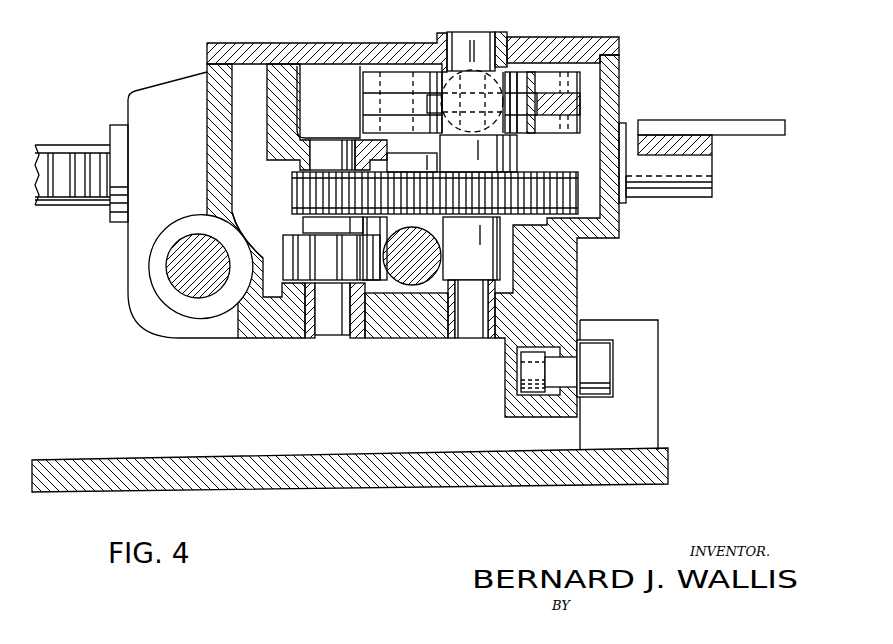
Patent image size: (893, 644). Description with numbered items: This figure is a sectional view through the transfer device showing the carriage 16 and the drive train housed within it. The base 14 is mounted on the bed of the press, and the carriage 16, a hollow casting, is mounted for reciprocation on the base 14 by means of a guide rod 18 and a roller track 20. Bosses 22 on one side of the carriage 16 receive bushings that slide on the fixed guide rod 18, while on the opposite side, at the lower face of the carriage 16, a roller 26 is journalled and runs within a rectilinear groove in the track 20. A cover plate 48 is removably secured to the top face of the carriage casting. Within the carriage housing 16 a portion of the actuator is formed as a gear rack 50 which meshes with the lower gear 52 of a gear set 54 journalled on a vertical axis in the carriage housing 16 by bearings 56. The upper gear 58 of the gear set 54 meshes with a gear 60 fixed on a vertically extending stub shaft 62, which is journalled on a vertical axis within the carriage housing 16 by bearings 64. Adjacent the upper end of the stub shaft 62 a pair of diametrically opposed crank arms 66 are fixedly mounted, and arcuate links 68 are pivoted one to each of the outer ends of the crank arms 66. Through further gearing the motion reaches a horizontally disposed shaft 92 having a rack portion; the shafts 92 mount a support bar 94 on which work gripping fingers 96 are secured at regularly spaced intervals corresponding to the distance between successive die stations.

The base 14 is at (626, 485).
The carriage 16 is at (573, 272).
The guide rod 18 is at (188, 288).
The roller track 20 is at (648, 400).
The bosses 22 is at (138, 230).
The roller 26 is at (610, 358).
The cover plate 48 is at (568, 40).
The gear rack 50 is at (408, 285).
The lower gear 52 is at (293, 278).
The gear set 54 is at (293, 223).
The bearings 56 is at (314, 146).
The upper gear 58 is at (298, 187).
The gear 60 is at (542, 173).
The stub shaft 62 is at (473, 323).
The bearings 64 is at (508, 35).
The crank arms 66 is at (407, 80).
The arcuate links 68 is at (383, 96).
The shaft 92 is at (677, 187).
The support bar 94 is at (662, 137).
The work gripping fingers 96 is at (733, 123).